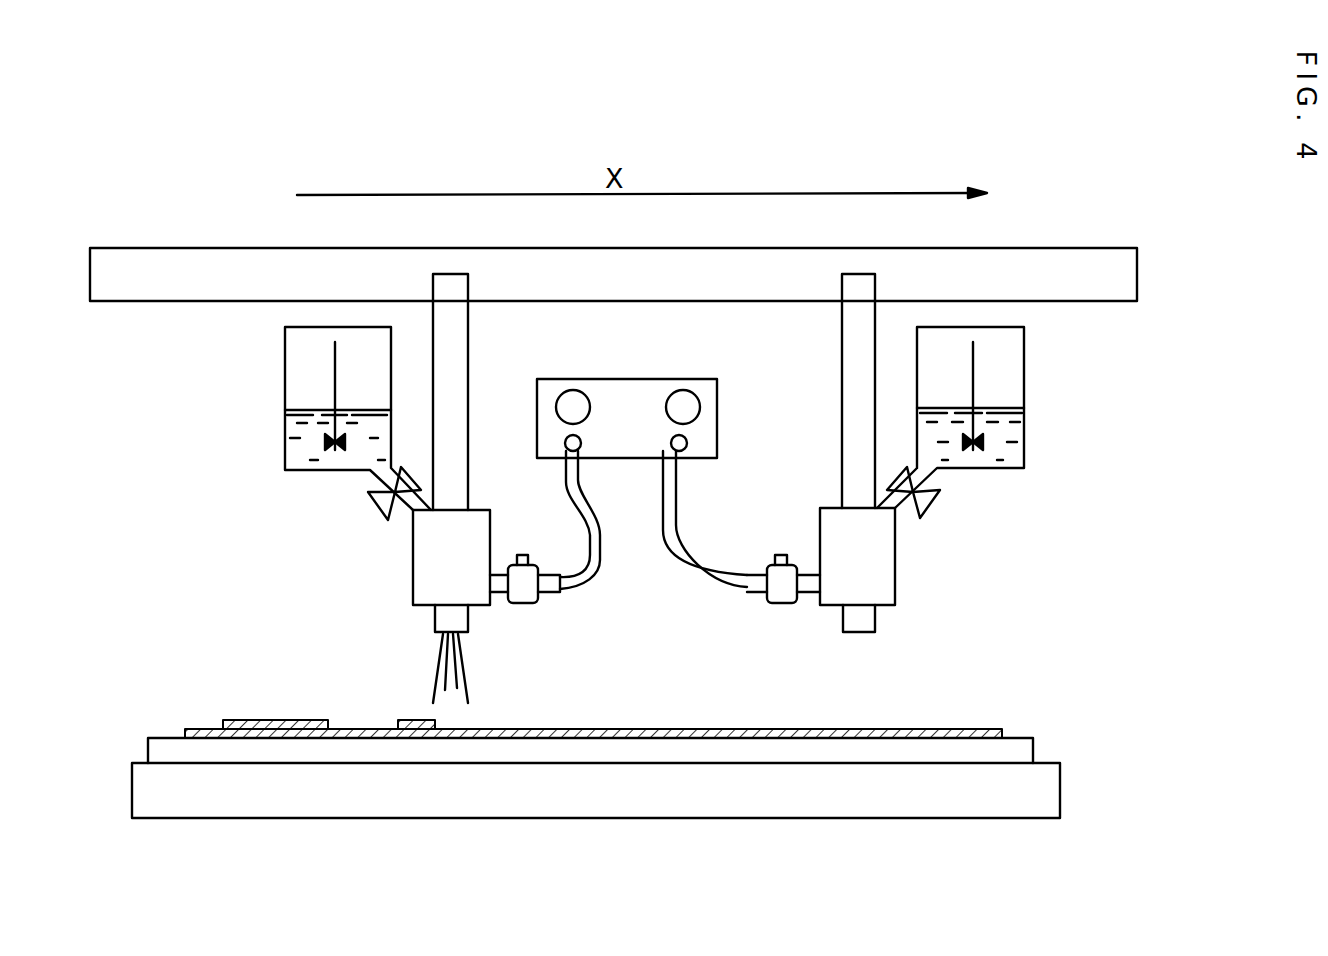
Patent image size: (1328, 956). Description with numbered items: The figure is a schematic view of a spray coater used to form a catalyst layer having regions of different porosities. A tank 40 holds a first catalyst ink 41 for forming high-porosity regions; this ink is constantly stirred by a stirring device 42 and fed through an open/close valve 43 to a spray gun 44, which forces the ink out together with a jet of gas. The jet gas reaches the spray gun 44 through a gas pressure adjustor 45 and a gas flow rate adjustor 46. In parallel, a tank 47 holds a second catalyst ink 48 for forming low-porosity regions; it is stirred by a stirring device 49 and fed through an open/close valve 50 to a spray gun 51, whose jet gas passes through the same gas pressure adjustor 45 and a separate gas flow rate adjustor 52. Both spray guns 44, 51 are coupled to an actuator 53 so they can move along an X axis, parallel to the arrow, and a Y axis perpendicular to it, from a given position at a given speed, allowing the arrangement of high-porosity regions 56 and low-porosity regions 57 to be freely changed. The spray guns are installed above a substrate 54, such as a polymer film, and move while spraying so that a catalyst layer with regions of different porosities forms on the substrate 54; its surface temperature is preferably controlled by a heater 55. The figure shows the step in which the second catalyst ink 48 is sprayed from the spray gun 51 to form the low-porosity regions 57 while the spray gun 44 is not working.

The tank 40 is at (1024, 388).
The first catalyst ink 41 is at (1000, 450).
The stirring device 42 is at (973, 362).
The open/close valve 43 is at (928, 505).
The spray gun 44 is at (875, 577).
The gas pressure adjustor 45 is at (630, 403).
The gas flow rate adjustor 46 is at (783, 590).
The tank 47 is at (285, 386).
The second catalyst ink 48 is at (305, 443).
The stirring device 49 is at (333, 362).
The open/close valve 50 is at (380, 507).
The spray gun 51 is at (430, 572).
The gas flow rate adjustor 52 is at (530, 595).
The actuator 53 is at (225, 260).
The substrate 54 is at (1015, 753).
The heater 55 is at (1043, 788).
The high-porosity regions 56 is at (868, 730).
The low-porosity regions 57 is at (782, 732).